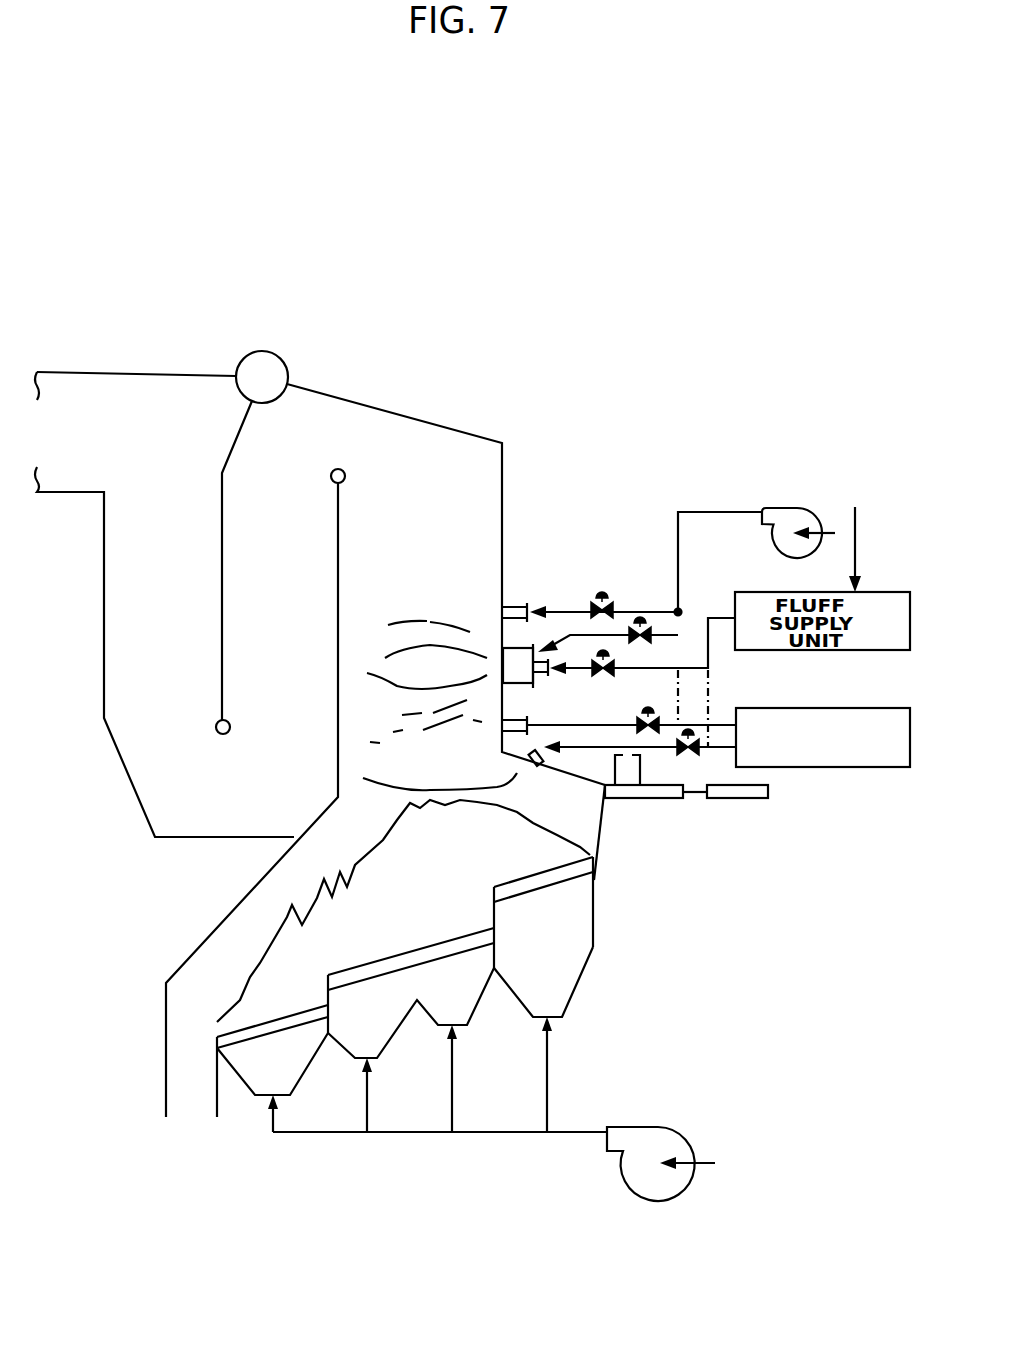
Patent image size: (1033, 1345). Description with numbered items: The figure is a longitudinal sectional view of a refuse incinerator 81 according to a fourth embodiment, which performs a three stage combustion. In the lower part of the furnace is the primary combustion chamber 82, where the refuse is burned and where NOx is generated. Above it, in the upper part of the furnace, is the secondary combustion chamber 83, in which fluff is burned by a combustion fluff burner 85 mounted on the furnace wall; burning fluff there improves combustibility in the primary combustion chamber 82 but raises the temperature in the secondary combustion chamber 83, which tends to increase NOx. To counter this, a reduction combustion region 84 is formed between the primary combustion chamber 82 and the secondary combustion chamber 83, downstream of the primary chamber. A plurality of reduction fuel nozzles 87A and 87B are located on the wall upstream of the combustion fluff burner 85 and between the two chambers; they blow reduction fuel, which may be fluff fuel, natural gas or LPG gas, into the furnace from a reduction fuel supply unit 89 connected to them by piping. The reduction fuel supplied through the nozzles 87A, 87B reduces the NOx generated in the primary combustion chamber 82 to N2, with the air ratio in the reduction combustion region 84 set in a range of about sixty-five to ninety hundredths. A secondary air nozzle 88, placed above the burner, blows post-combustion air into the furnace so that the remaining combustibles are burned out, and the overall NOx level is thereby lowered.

The refuse incinerator 81 is at (430, 415).
The primary combustion chamber 82 is at (440, 898).
The secondary combustion chamber 83 is at (428, 604).
The reduction combustion region 84 is at (449, 773).
The combustion fluff burner 85 is at (512, 660).
The reduction fuel nozzle 87A is at (545, 765).
The reduction fuel nozzle 87B is at (510, 722).
The secondary air nozzle 88 is at (510, 605).
The reduction fuel supply unit 89 is at (830, 768).